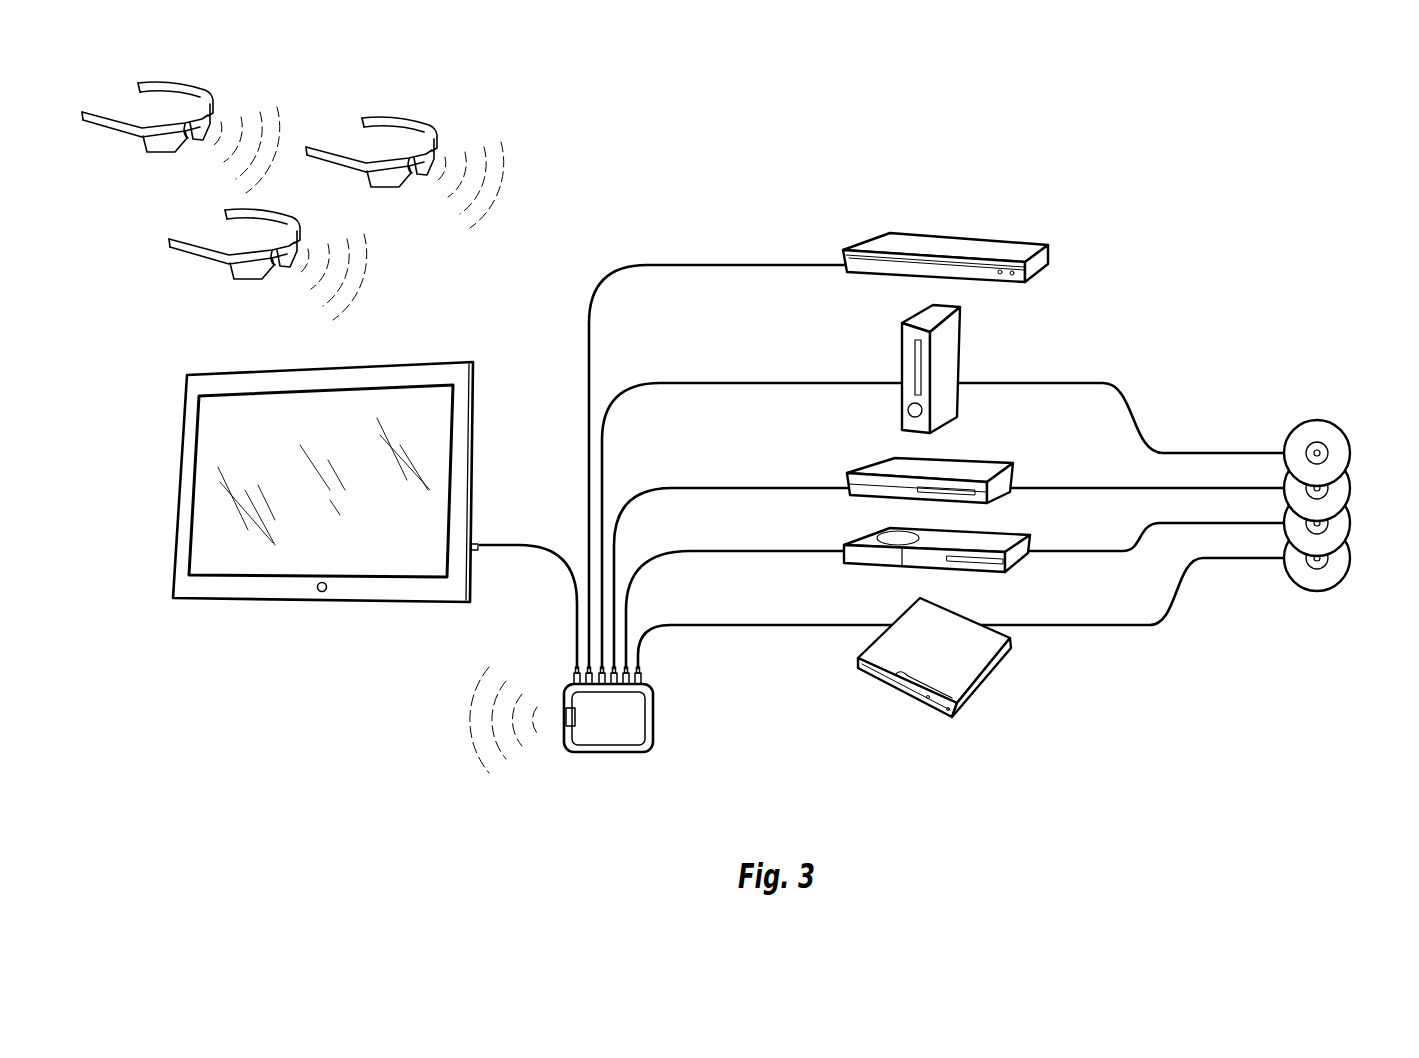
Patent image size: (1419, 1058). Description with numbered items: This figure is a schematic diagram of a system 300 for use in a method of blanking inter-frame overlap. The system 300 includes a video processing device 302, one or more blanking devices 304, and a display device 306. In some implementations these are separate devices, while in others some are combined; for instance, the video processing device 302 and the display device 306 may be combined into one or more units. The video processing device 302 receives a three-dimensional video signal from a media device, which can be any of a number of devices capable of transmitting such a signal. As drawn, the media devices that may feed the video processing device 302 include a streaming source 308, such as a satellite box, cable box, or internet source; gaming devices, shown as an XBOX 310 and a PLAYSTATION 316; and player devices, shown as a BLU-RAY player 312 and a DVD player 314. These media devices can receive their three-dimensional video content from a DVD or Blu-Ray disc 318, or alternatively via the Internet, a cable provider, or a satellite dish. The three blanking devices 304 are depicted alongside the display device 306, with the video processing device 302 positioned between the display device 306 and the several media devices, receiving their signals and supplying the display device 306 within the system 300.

The system 300 is at (1092, 149).
The video processing device 302 is at (642, 745).
The blanking devices 304 is at (200, 88).
The display device 306 is at (428, 368).
The streaming source 308 is at (965, 243).
The XBOX 310 is at (948, 352).
The BLU-RAY player 312 is at (968, 458).
The DVD player 314 is at (970, 533).
The PLAYSTATION 316 is at (968, 665).
The DVD or Blu-Ray disc 318 is at (1347, 402).